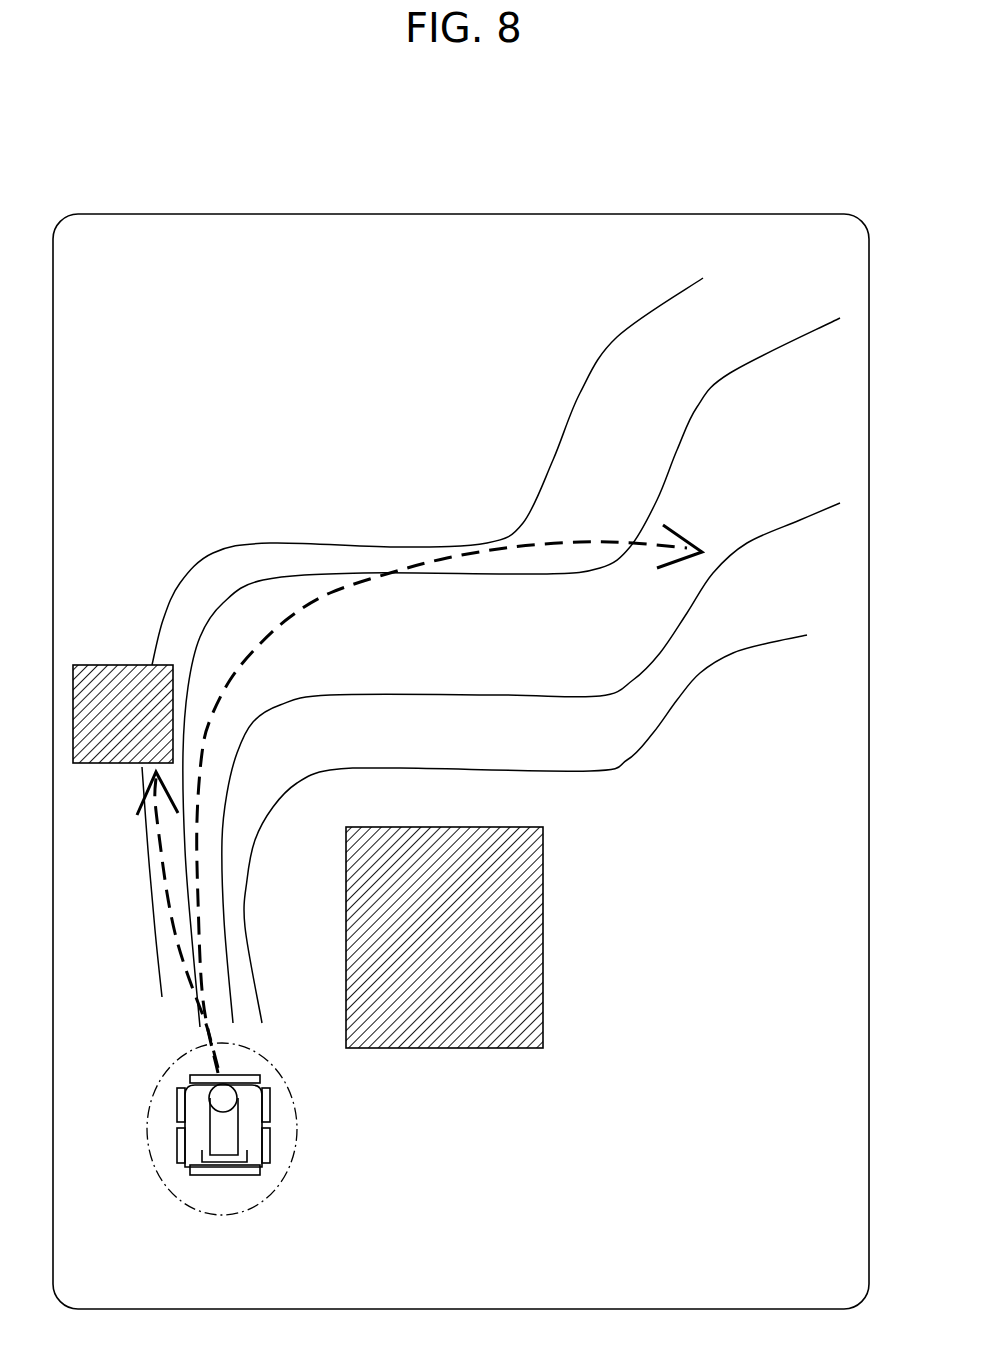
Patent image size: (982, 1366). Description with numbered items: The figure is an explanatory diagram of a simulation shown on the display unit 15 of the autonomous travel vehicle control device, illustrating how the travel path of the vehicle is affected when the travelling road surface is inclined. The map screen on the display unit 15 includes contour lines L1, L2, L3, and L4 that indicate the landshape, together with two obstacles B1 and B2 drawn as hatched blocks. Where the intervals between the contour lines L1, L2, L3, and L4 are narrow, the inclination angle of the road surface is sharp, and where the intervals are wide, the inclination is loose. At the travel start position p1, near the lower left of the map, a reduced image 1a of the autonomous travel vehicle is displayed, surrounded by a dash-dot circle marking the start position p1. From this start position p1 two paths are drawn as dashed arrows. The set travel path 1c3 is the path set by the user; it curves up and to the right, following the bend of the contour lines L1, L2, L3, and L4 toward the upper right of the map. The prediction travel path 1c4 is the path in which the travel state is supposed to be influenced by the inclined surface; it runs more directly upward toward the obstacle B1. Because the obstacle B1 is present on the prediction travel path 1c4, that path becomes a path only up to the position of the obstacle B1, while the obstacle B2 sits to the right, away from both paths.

The display unit 15 is at (428, 213).
The contour line L1 is at (616, 335).
The contour line L2 is at (730, 374).
The contour line L3 is at (822, 505).
The contour line L4 is at (771, 641).
The obstacle B1 is at (110, 672).
The obstacle B2 is at (543, 900).
The set travel path 1c3 is at (335, 595).
The prediction travel path 1c4 is at (198, 1007).
The reduced image of the autonomous travel vehicle 1a is at (255, 1115).
The travel start position p1 is at (287, 1173).